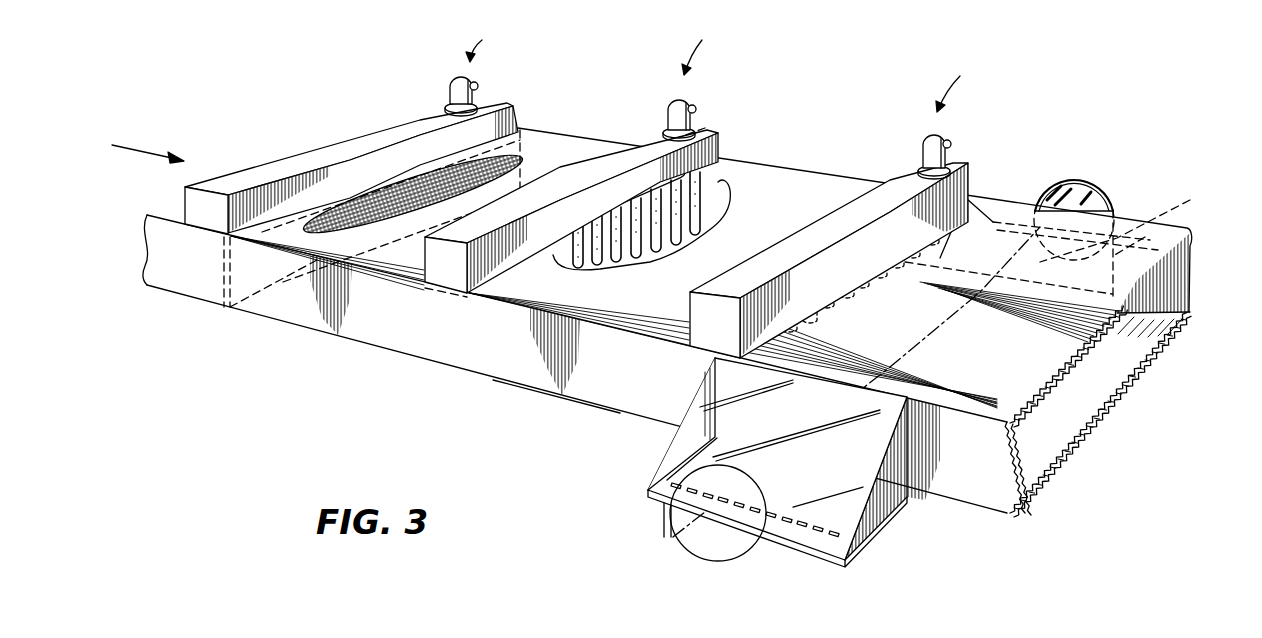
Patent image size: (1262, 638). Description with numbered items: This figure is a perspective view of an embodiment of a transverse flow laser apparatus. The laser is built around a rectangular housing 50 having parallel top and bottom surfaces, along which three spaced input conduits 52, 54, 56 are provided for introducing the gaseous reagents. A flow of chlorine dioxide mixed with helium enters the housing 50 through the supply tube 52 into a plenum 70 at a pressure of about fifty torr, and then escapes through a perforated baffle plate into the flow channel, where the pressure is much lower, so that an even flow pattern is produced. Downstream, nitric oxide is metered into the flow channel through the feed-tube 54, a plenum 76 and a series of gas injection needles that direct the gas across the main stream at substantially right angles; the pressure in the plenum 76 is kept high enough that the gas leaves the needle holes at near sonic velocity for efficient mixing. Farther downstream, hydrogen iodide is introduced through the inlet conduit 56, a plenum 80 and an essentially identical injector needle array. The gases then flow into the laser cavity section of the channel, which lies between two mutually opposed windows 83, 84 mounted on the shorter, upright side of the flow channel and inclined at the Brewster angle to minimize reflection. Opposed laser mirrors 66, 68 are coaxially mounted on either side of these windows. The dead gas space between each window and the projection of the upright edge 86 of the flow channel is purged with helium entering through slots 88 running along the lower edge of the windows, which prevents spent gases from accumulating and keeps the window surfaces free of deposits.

The rectangular housing 50 is at (380, 328).
The input conduit 52 is at (480, 86).
The input conduit 54 is at (700, 107).
The input conduit 56 is at (923, 155).
The laser mirror 66 is at (707, 548).
The laser mirror 68 is at (1050, 177).
The plenum 70 is at (400, 130).
The plenum 76 is at (608, 168).
The plenum 80 is at (848, 213).
The inclined window 83 is at (1145, 237).
The inclined window 84 is at (887, 517).
The upright edge of the flow channel 86 is at (582, 405).
The slots 88 is at (822, 530).